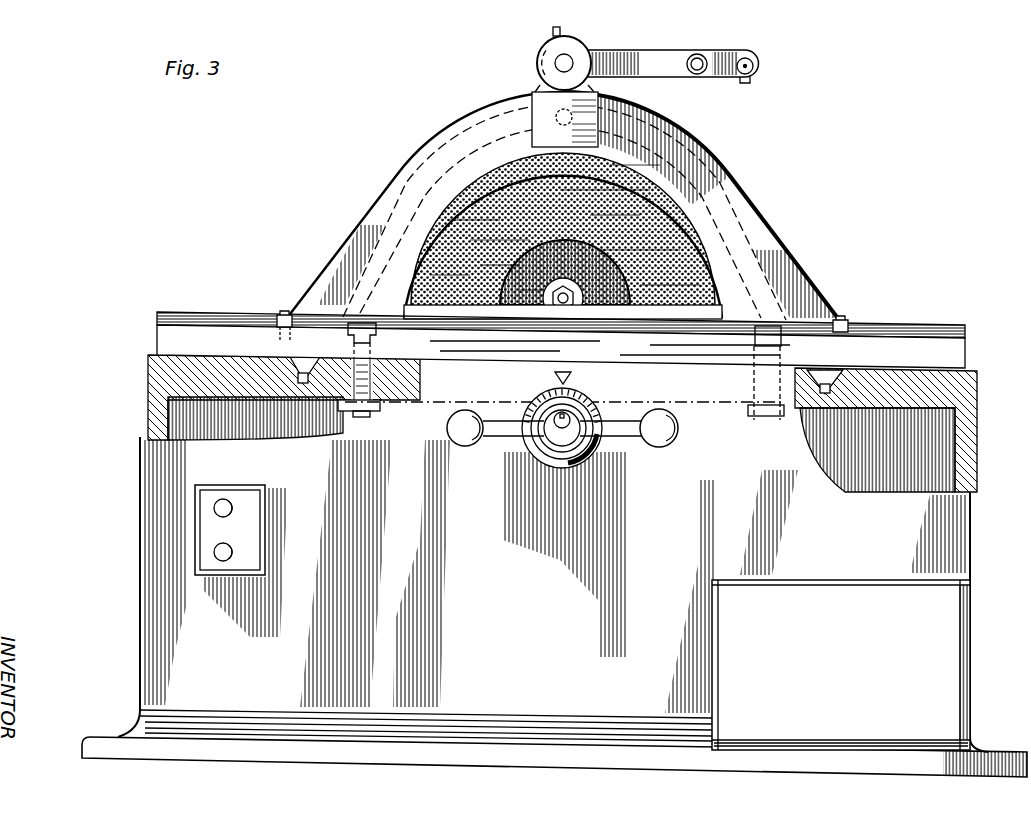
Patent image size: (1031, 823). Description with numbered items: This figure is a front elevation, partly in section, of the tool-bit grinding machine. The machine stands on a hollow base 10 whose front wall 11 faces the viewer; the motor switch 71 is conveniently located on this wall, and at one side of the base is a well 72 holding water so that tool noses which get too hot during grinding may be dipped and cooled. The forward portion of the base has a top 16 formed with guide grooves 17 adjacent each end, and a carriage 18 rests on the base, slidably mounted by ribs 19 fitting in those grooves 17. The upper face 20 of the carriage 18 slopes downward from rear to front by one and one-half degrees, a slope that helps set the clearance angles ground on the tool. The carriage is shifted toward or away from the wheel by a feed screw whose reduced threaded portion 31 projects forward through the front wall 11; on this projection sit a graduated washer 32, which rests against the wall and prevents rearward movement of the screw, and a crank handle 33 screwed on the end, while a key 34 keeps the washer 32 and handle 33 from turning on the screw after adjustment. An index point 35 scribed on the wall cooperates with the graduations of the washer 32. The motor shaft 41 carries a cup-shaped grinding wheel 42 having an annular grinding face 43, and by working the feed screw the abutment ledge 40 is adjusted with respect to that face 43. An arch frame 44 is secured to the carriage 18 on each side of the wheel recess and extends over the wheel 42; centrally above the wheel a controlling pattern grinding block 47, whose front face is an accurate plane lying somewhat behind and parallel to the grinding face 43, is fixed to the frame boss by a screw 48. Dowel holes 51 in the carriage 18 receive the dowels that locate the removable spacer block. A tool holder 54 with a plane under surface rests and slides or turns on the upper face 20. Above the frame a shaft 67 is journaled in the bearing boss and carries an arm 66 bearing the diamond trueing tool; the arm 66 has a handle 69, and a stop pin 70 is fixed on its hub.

The base 10 is at (136, 533).
The front wall 11 is at (500, 576).
The top 16 is at (178, 368).
The guide grooves 17 is at (297, 370).
The carriage 18 is at (168, 339).
The ribs 19 is at (306, 360).
The upper face 20 is at (206, 308).
The reduced threaded portion 31 is at (568, 427).
The graduated washer 32 is at (531, 404).
The crank handle 33 is at (505, 430).
The key 34 is at (560, 430).
The index point 35 is at (572, 378).
The abutment ledge 40 is at (513, 312).
The motor shaft 41 is at (561, 304).
The grinding wheel 42 is at (426, 280).
The annular grinding face 43 is at (712, 276).
The arch frame 44 is at (385, 192).
The controlling pattern grinding block 47 is at (536, 100).
The screw 48 is at (625, 95).
The dowel holes 51 is at (283, 313).
The tool holder 54 is at (367, 418).
The arm 66 is at (672, 40).
The shaft 67 is at (752, 58).
The handle 69 is at (718, 36).
The stop pin 70 is at (553, 31).
The switch 71 is at (250, 526).
The well 72 is at (841, 665).